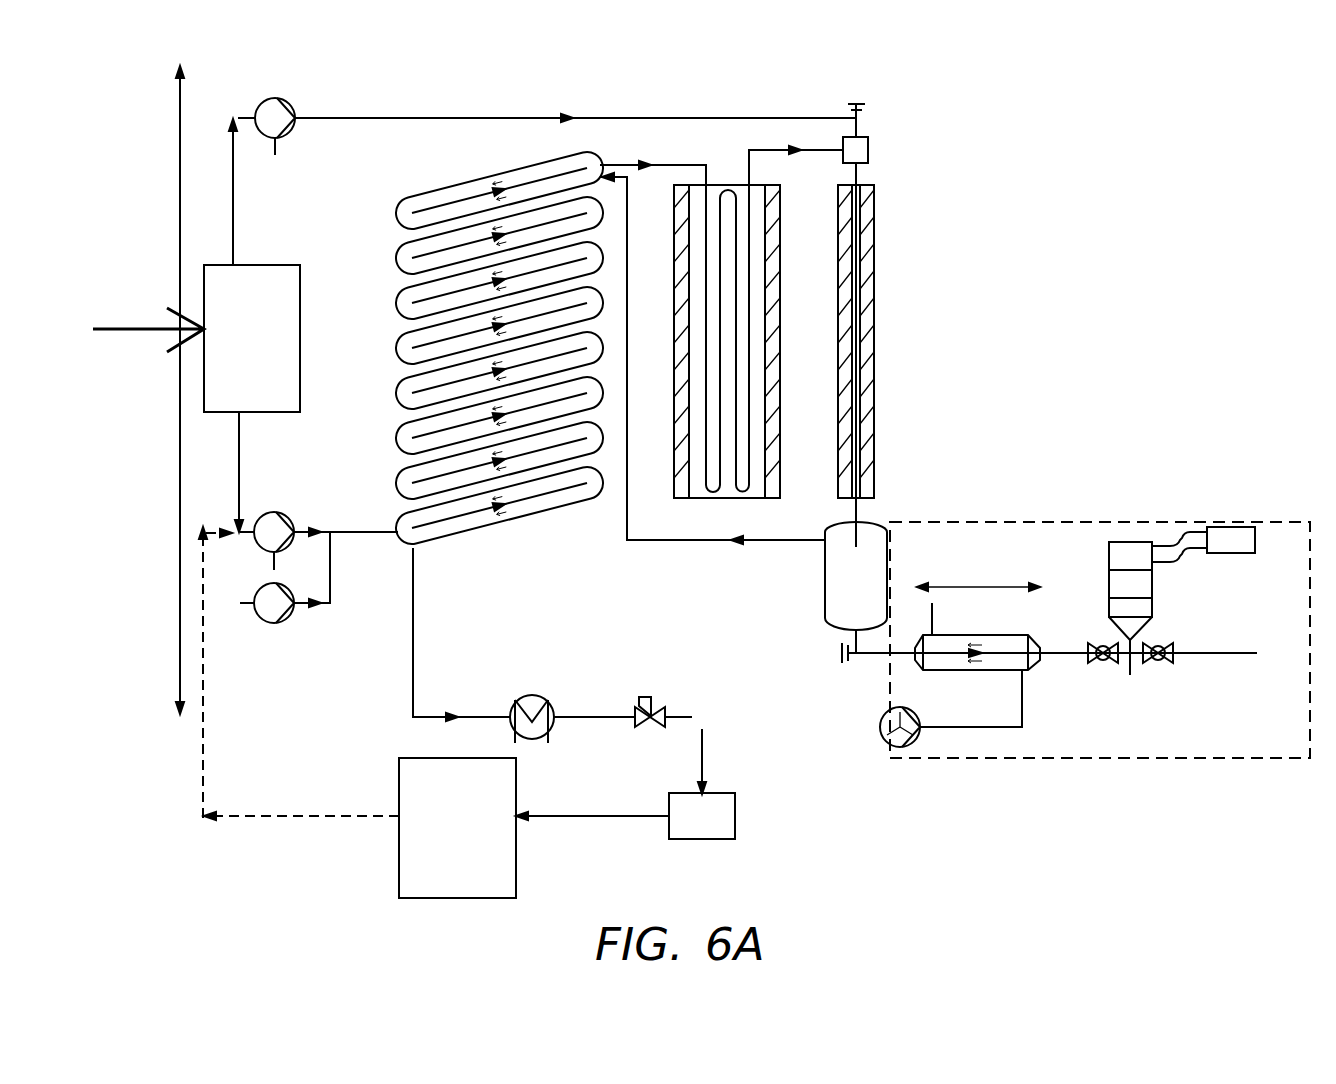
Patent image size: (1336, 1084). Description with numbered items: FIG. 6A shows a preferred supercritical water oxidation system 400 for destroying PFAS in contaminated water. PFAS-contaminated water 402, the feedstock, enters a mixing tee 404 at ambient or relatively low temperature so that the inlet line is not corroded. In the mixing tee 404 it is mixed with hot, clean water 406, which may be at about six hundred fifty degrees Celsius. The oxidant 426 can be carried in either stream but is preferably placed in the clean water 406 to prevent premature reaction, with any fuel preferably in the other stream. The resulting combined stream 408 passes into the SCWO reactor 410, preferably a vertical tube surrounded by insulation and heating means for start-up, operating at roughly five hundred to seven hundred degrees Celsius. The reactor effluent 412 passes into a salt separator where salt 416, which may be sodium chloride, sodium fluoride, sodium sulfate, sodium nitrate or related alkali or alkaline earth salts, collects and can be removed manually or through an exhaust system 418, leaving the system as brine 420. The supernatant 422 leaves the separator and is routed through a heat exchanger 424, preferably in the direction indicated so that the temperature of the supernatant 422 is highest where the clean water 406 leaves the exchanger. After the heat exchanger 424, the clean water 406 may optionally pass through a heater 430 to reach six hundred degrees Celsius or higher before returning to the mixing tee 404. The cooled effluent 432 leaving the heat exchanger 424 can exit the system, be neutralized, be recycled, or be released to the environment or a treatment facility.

The system 400 is at (1092, 220).
The PFAS-contaminated water 402 is at (410, 116).
The mixing tee 404 is at (870, 137).
The hot, clean water 406 is at (358, 532).
The combined stream 408 is at (872, 178).
The SCWO reactor 410 is at (867, 340).
The effluent 412 is at (860, 508).
The salt 416 is at (837, 588).
The exhaust system 418 is at (955, 637).
The brine 420 is at (1079, 613).
The supernatant 422 is at (653, 542).
The heat exchanger 424 is at (505, 172).
The oxidant 426 is at (240, 607).
The heater 430 is at (715, 185).
The effluent 432 is at (413, 632).